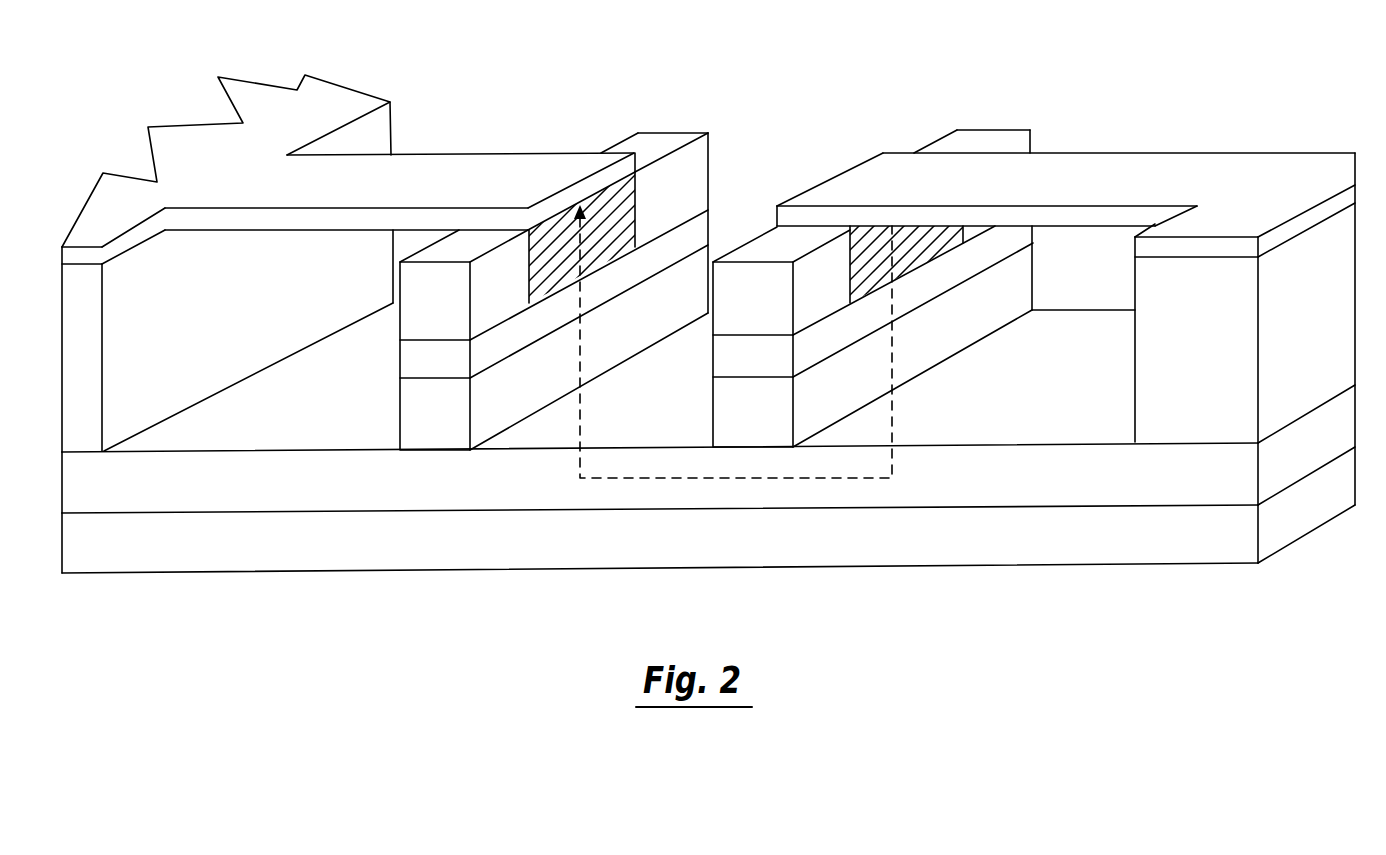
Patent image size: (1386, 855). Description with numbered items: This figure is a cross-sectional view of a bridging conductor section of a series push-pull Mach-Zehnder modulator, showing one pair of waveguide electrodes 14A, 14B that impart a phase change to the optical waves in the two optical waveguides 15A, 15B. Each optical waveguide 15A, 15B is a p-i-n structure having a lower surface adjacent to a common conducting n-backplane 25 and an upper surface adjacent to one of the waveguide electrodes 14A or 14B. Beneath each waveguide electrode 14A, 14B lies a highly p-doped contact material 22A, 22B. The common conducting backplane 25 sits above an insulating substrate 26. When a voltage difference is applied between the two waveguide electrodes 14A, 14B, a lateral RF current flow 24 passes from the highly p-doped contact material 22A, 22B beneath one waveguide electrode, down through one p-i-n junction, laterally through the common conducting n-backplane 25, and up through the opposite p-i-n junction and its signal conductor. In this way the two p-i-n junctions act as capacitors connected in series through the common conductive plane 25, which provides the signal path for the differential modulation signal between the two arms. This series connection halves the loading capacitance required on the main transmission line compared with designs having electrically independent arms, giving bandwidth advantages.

The waveguide electrode 14A is at (477, 185).
The waveguide electrode 14B is at (895, 183).
The highly p-doped contact material 22A is at (636, 200).
The highly p-doped contact material 22B is at (920, 258).
The optical waveguide 15A is at (402, 358).
The optical waveguide 15B is at (720, 353).
The lateral RF current flow 24 is at (893, 415).
The common conducting n-backplane 25 is at (274, 497).
The insulating substrate 26 is at (274, 557).